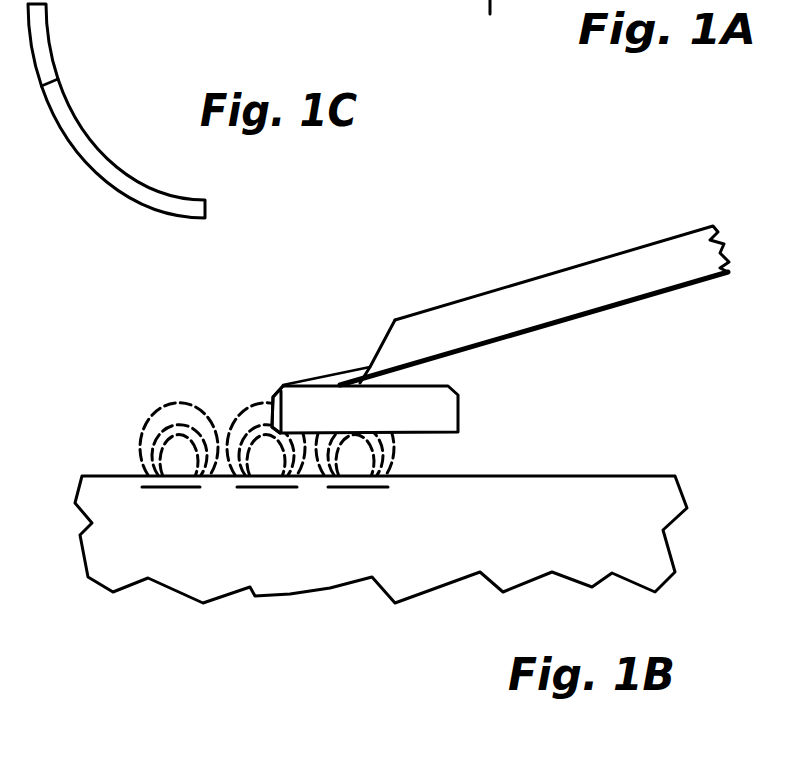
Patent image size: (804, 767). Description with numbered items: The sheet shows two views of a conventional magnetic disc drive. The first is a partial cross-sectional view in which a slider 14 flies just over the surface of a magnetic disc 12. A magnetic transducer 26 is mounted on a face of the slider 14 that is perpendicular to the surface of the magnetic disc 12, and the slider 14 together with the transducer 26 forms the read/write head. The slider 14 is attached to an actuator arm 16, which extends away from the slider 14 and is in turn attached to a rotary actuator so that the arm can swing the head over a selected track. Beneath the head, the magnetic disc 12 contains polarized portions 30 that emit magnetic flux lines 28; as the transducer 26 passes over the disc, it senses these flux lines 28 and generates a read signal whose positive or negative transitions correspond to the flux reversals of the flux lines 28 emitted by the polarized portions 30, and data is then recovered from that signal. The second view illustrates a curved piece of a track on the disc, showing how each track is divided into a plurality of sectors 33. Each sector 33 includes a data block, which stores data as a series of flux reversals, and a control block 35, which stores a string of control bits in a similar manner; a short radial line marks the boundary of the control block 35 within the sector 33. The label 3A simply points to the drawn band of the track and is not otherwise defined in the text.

In FIG. 1B, the magnetic disc 12 is at (632, 476).
In FIG. 1B, the slider 14 is at (437, 432).
In FIG. 1B, the actuator arm 16 is at (552, 287).
In FIG. 1B, the magnetic transducer 26 is at (277, 393).
In FIG. 1B, the magnetic flux lines 28 is at (173, 401).
In FIG. 1B, the polarized portions 30 is at (170, 488).
In FIG. 1C, the sector 33 is at (50, 54).
In FIG. 1C, the control block 35 is at (54, 59).
In FIG. 1C, the arc band 3A is at (116, 170).